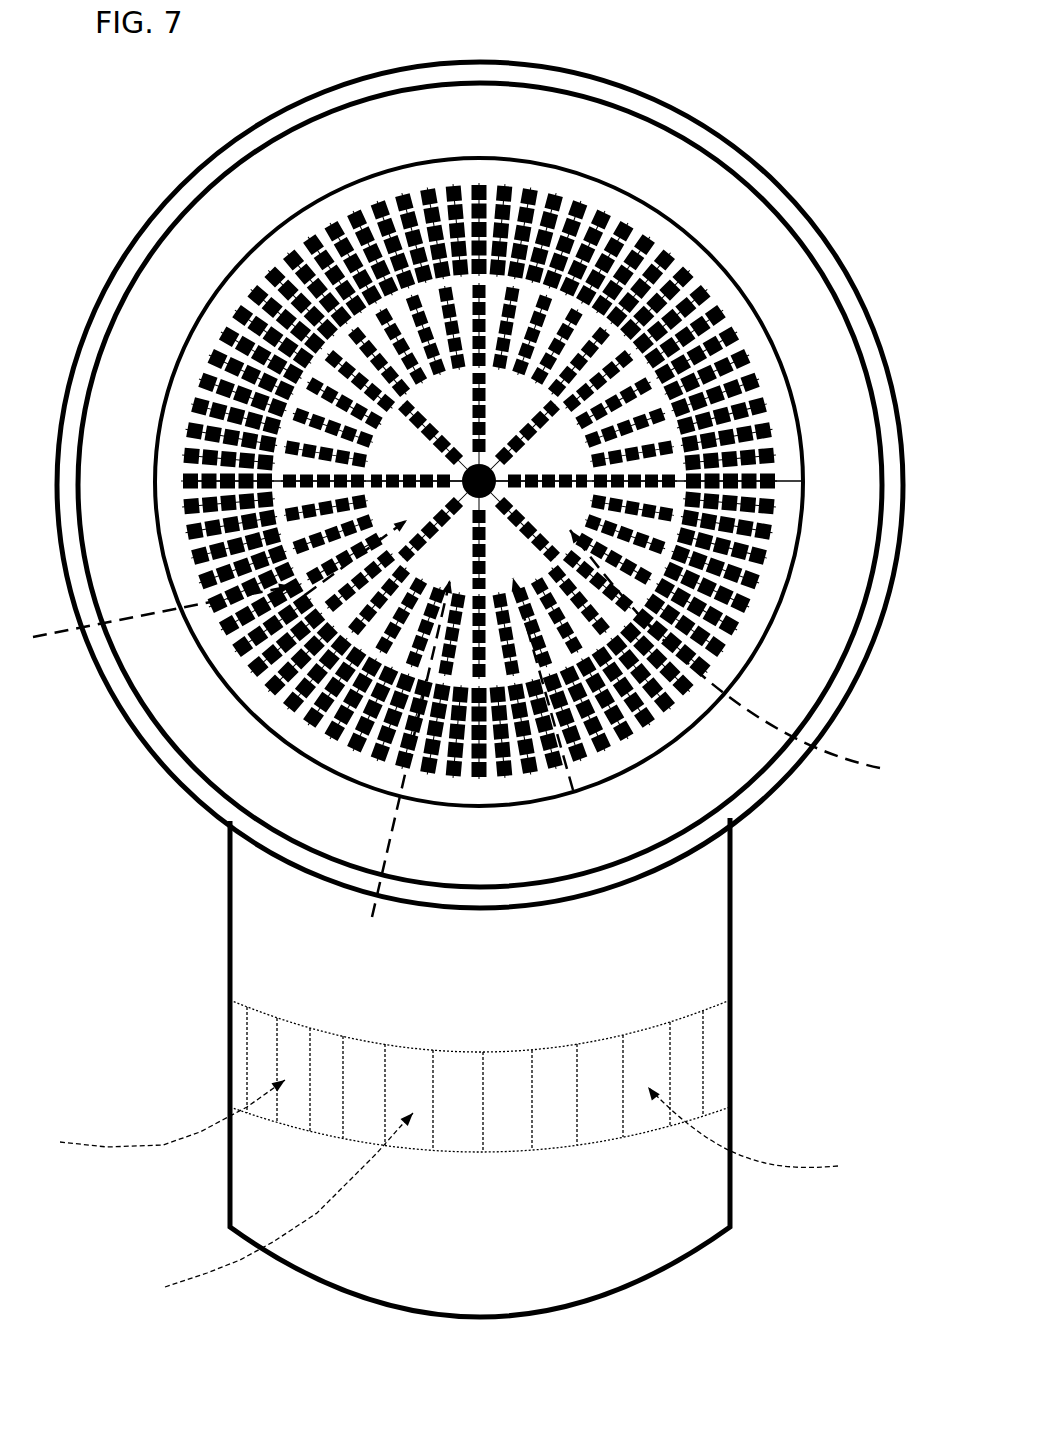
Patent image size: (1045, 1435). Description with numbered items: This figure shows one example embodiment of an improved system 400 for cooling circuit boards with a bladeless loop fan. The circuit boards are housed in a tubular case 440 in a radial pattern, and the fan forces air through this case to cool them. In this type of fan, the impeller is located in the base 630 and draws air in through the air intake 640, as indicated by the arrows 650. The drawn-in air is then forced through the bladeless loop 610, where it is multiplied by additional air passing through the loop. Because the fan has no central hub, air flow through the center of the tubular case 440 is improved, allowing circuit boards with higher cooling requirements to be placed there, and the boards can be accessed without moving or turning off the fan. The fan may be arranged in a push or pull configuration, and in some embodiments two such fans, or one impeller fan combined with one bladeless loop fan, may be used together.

The improved system for cooling circuit boards 400 is at (866, 21).
The tubular case 440 is at (616, 200).
The bladeless loop 610 is at (855, 240).
The base 630 is at (732, 948).
The air intake 640 is at (732, 1032).
The arrows 650 is at (765, 1160).